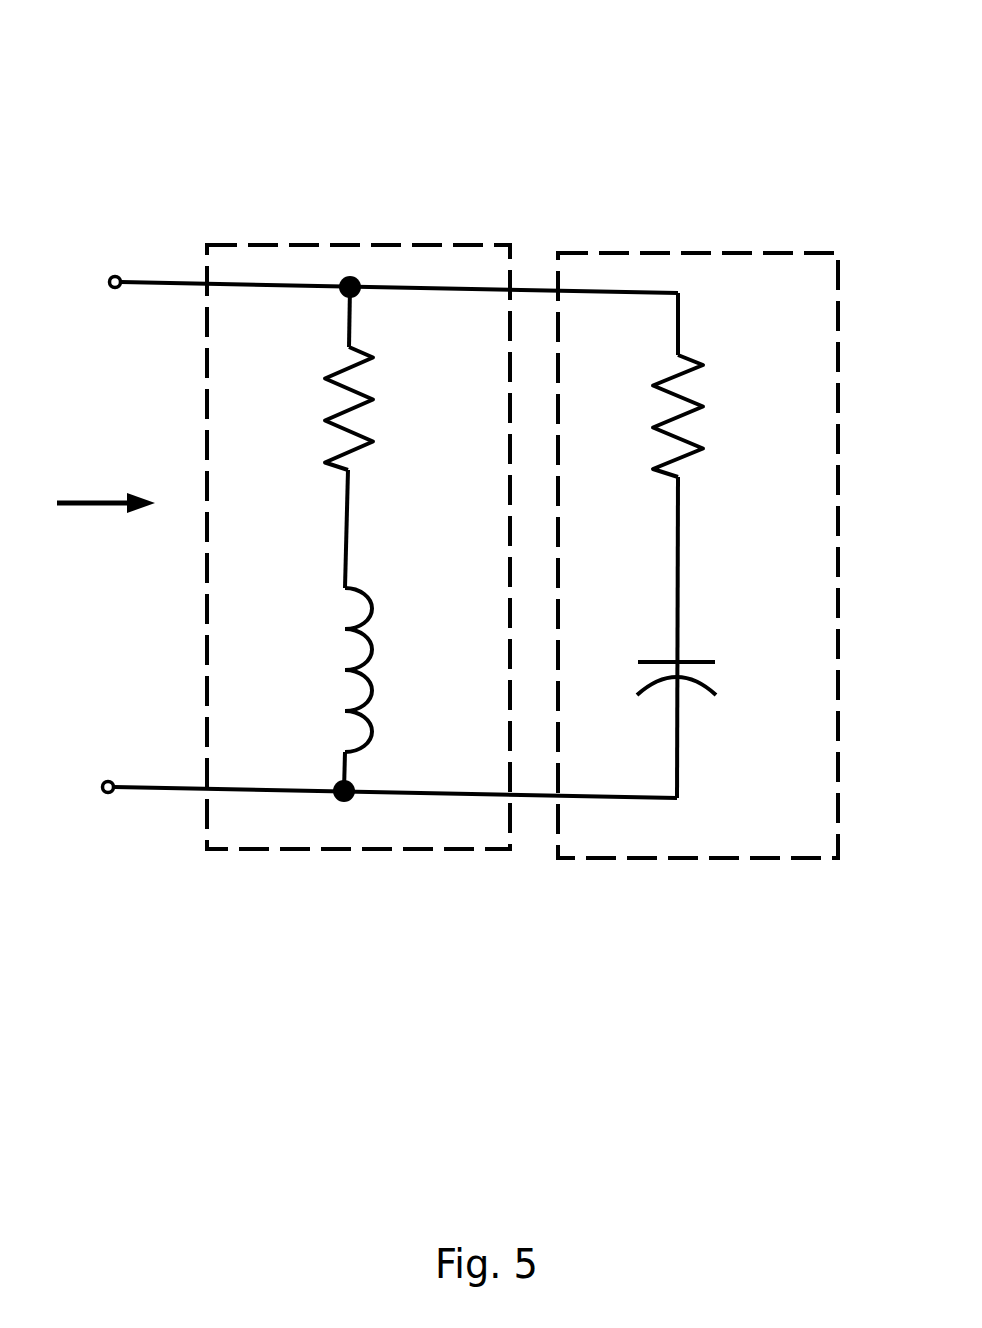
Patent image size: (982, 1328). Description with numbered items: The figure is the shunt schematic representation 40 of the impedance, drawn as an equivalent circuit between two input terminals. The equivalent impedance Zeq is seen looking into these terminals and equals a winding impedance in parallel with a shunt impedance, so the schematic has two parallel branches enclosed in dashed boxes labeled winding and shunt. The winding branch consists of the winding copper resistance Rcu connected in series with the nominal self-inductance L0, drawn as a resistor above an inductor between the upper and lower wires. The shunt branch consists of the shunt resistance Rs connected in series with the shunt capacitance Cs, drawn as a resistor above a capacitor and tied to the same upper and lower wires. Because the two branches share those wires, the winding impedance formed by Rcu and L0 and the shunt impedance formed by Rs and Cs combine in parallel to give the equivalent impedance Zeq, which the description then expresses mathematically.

The shunt schematic representation 40 is at (632, 110).
The winding copper resistance Rcu is at (305, 408).
The nominal self-inductance L0 is at (316, 670).
The shunt resistance Rs is at (730, 416).
The shunt capacitance Cs is at (721, 692).
The equivalent impedance Zeq is at (100, 461).